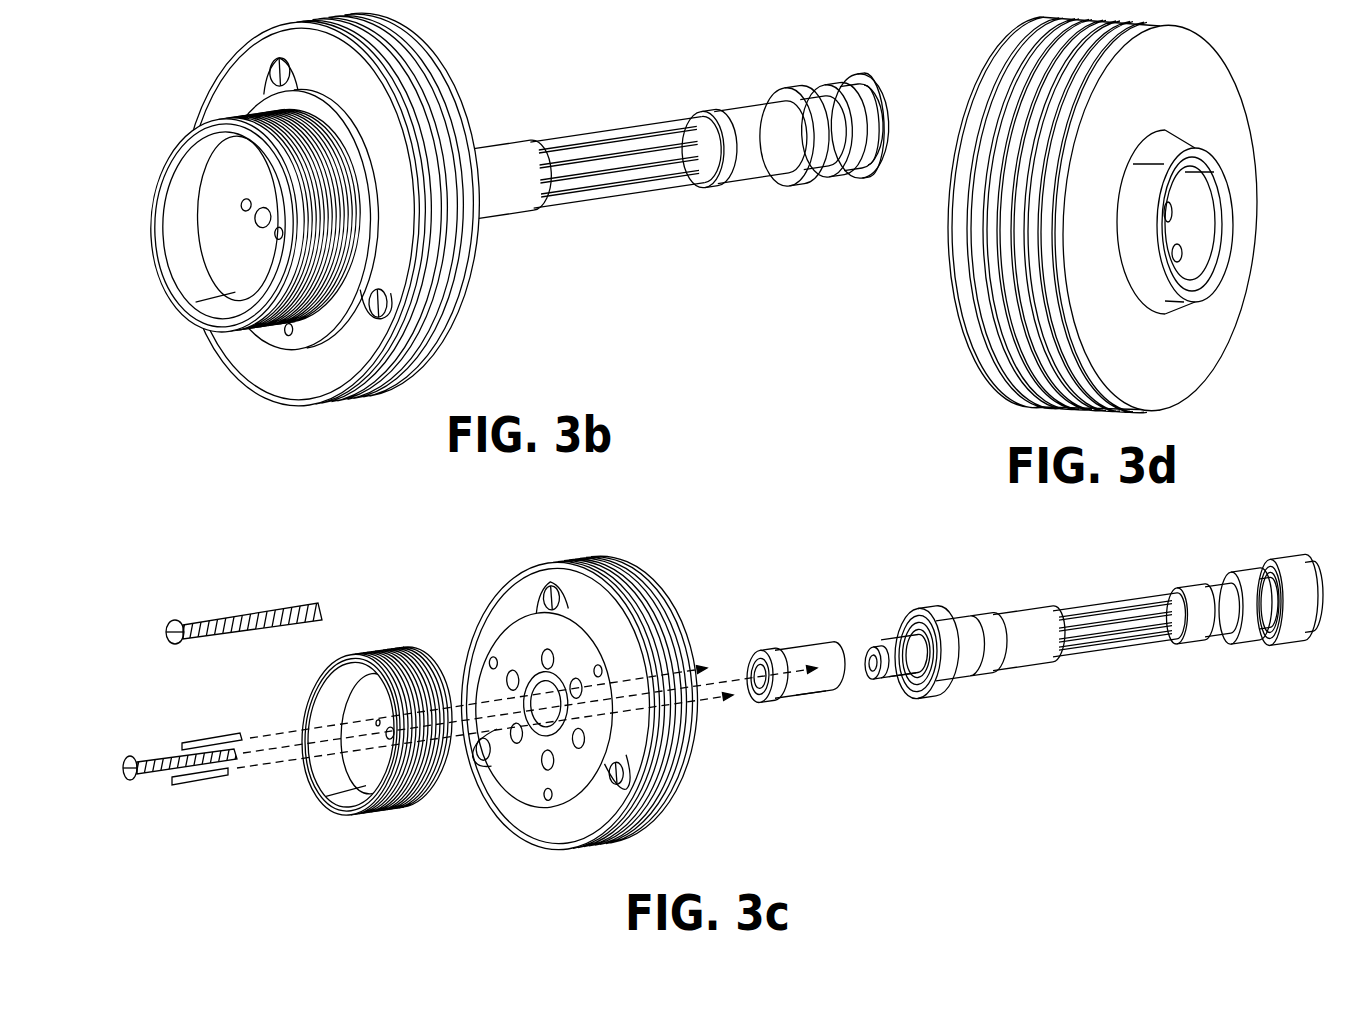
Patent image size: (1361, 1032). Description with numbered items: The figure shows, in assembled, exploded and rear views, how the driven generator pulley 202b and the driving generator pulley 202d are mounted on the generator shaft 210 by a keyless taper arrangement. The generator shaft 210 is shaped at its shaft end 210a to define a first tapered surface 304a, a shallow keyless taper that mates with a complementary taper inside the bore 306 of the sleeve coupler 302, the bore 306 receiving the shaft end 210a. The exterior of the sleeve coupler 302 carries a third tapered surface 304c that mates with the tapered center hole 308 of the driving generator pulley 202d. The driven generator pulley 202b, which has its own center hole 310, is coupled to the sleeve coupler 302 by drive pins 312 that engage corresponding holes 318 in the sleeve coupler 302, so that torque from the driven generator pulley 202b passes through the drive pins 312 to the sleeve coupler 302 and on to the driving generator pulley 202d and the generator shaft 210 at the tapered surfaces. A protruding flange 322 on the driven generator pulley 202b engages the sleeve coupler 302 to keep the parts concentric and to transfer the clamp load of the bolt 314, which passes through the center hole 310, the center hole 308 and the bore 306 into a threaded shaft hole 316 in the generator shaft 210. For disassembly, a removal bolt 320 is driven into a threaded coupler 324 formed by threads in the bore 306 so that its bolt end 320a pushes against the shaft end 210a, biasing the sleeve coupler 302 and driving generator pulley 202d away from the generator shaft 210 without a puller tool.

In FIG. 3b, the driven generator pulley 202b is at (157, 281).
In FIG. 3d, the driven generator pulley 202b is at (941, 268).
In FIG. 3c, the driven generator pulley 202b is at (330, 800).
In FIG. 3b, the driving generator pulley 202d is at (436, 50).
In FIG. 3c, the driving generator pulley 202d is at (655, 582).
In FIG. 3b, the generator shaft 210 is at (605, 121).
In FIG. 3c, the generator shaft 210 is at (1093, 585).
In FIG. 3c, the shaft end 210a is at (877, 605).
In FIG. 3c, the sleeve coupler 302 is at (833, 700).
In FIG. 3c, the first tapered surface 304a is at (893, 688).
In FIG. 3c, the third tapered surface 304c is at (805, 708).
In FIG. 3c, the bore 306 is at (773, 655).
In FIG. 3c, the center hole 308 is at (547, 745).
In FIG. 3c, the center hole 310 is at (393, 740).
In FIG. 3c, the drive pins 312 is at (222, 742).
In FIG. 3c, the bolt 314 is at (128, 762).
In FIG. 3c, the threaded shaft hole 316 is at (865, 655).
In FIG. 3c, the holes 318 is at (753, 662).
In FIG. 3c, the removal bolt 320 is at (167, 622).
In FIG. 3c, the bolt end 320a is at (318, 603).
In FIG. 3d, the protruding flange 322 is at (1219, 130).
In FIG. 3c, the threaded coupler 324 is at (763, 694).